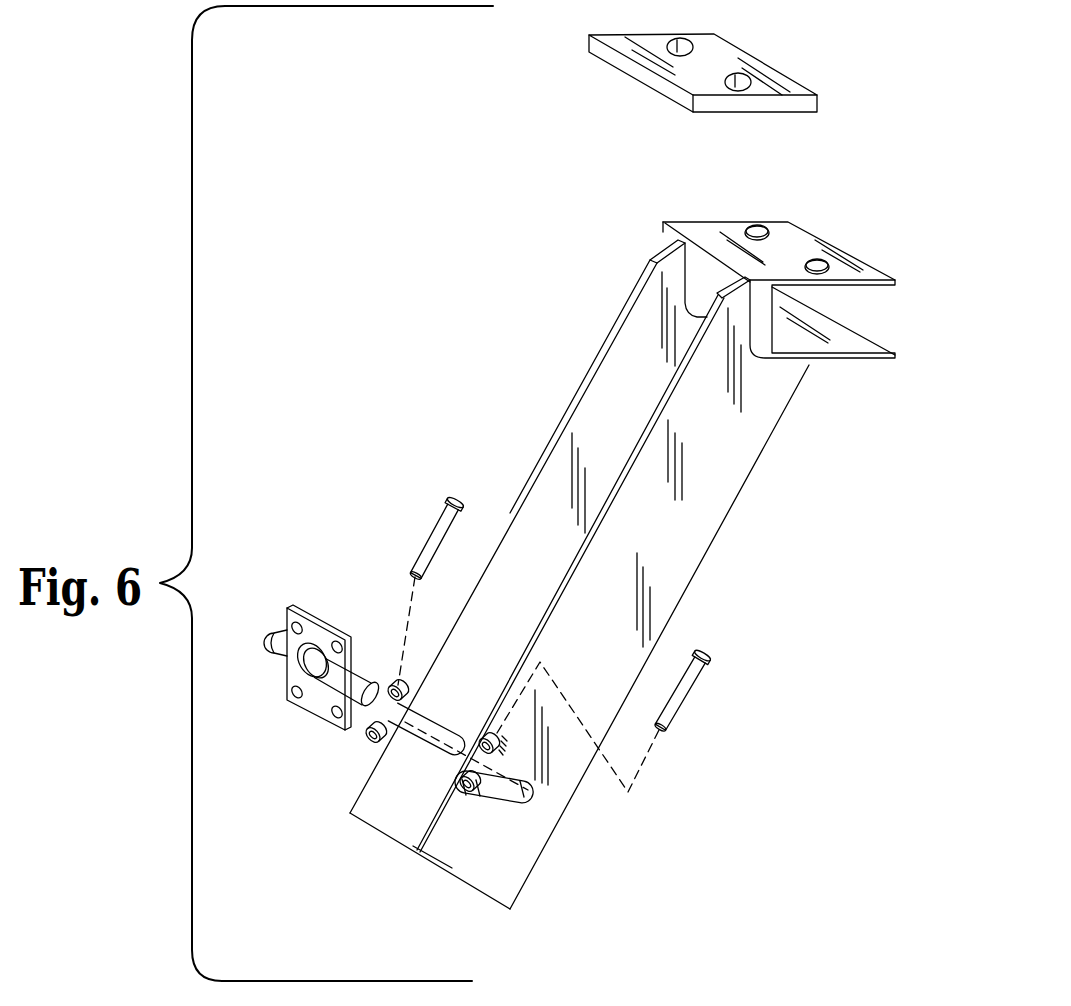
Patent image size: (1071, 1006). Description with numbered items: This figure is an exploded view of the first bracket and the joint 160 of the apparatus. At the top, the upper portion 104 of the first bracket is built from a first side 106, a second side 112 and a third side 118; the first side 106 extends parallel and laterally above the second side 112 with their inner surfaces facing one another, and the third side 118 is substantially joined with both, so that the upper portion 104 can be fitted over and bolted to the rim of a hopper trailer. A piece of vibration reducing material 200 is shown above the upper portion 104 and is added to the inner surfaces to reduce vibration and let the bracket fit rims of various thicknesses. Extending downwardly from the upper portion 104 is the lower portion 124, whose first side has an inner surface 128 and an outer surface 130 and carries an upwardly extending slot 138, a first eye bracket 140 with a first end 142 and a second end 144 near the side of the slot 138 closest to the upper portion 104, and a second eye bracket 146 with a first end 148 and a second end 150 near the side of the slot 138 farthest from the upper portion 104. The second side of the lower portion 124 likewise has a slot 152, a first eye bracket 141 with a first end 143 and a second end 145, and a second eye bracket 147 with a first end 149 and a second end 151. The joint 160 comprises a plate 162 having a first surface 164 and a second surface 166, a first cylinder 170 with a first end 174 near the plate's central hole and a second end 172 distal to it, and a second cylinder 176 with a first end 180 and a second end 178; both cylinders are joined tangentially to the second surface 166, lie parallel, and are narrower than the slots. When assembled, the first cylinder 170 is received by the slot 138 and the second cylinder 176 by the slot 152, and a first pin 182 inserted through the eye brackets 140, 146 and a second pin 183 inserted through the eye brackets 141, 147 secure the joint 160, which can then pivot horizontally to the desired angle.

The vibration reducing material 200 is at (612, 62).
The upper portion of the first bracket 104 is at (789, 281).
The first side 106 is at (713, 227).
The second side 112 is at (837, 333).
The third side 118 is at (616, 564).
The lower portion 124 is at (743, 487).
The inner surface of the first side of the lower portion 128 is at (683, 500).
The outer surface of the first side of the lower portion 130 is at (692, 357).
The first pin 182 is at (688, 684).
The second pin 183 is at (462, 500).
The joint 160 is at (300, 626).
The plate 162 is at (285, 630).
The first surface 164 is at (328, 622).
The second surface 166 is at (362, 685).
The first cylinder 170 is at (350, 672).
The second end of the first cylinder 172 is at (372, 706).
The first end of the first cylinder 174 is at (317, 712).
The second cylinder 176 is at (280, 628).
The second end of the second cylinder 178 is at (234, 625).
The first end of the second cylinder 180 is at (278, 652).
The first eye bracket 141 is at (402, 683).
The first end 143 is at (485, 735).
The second end 145 is at (392, 750).
The first end 149 is at (380, 724).
The second eye bracket 147 is at (385, 752).
The second end 151 is at (372, 745).
The slot 152 is at (440, 752).
The second end 150 is at (466, 797).
The second eye bracket 146 is at (478, 793).
The first end 148 is at (527, 785).
The slot 138 is at (503, 752).
The first eye bracket 140 is at (503, 743).
The first end 142 is at (502, 738).
The second end 144 is at (503, 748).